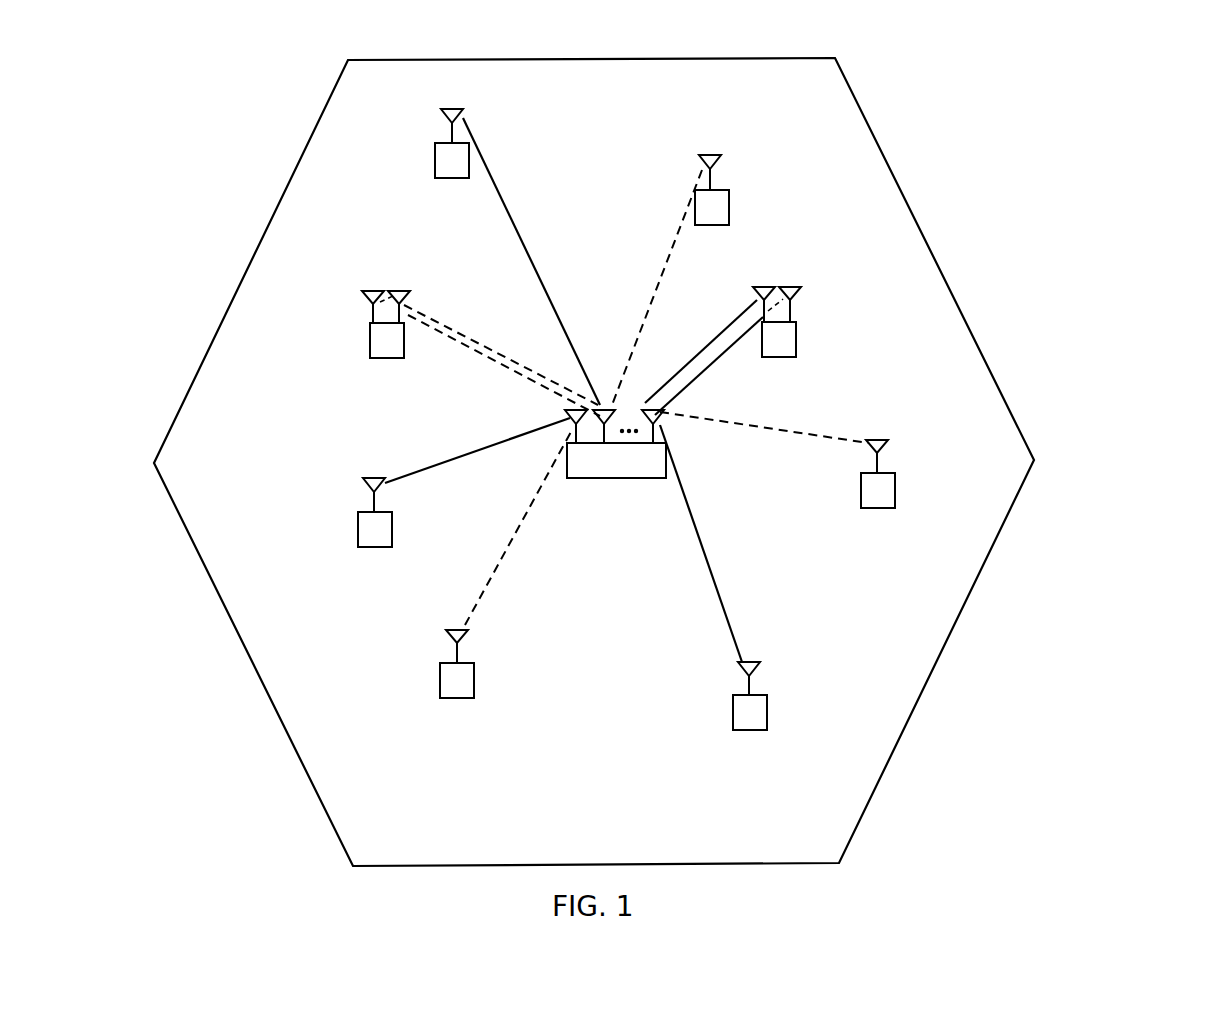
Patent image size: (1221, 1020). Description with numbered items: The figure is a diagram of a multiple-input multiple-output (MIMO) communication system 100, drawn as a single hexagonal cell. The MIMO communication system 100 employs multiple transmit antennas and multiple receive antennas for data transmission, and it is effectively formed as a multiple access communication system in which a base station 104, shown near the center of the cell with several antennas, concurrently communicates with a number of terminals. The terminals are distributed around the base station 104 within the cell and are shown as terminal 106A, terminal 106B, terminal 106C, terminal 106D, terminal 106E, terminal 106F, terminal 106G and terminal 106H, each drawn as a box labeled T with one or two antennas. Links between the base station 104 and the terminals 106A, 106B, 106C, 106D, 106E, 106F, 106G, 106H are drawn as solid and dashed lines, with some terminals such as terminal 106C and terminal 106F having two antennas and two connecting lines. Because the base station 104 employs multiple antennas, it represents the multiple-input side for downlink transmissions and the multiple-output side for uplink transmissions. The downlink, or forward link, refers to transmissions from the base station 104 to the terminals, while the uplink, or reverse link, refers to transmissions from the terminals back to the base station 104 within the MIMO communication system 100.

The multiple-input multiple-output (MIMO) communication system 100 is at (669, 453).
The base station 104 is at (660, 478).
The terminal 106A is at (377, 547).
The terminal 106B is at (457, 178).
The terminal 106C is at (775, 357).
The terminal 106D is at (750, 730).
The terminal 106E is at (458, 698).
The terminal 106F is at (390, 358).
The terminal 106G is at (710, 225).
The terminal 106H is at (878, 508).